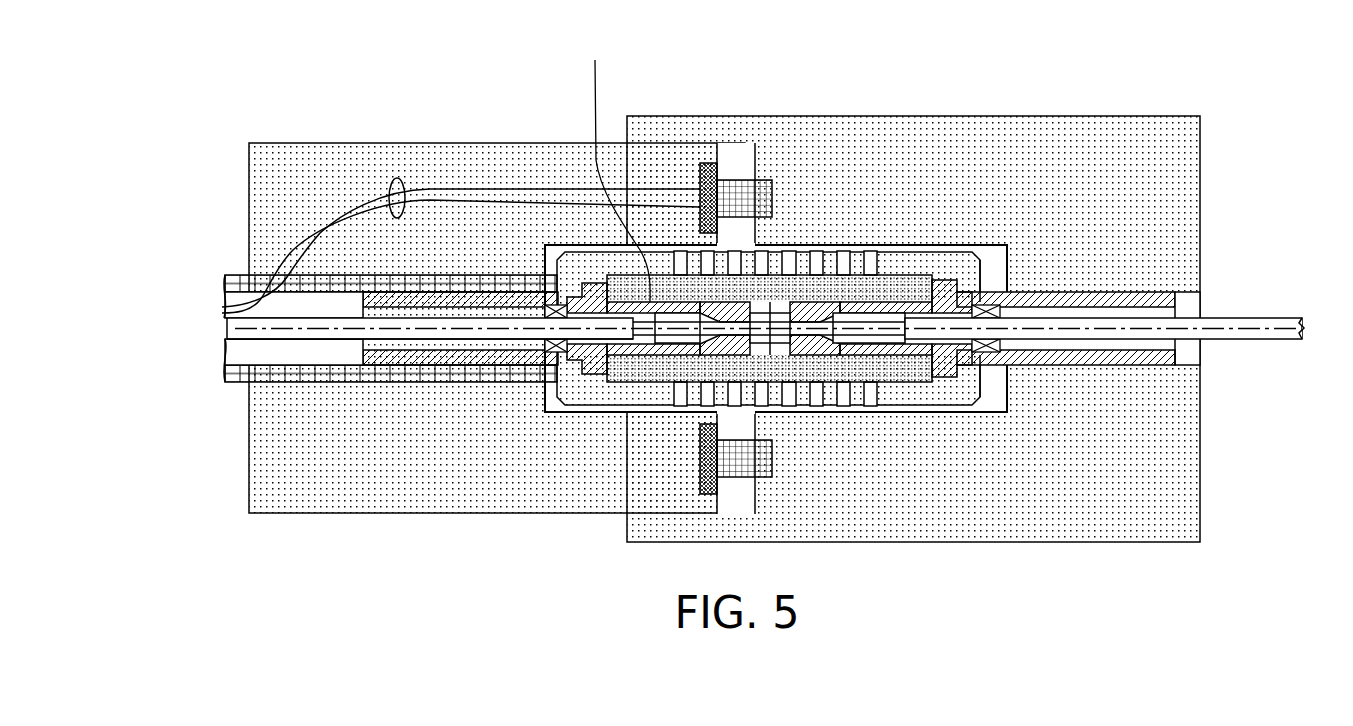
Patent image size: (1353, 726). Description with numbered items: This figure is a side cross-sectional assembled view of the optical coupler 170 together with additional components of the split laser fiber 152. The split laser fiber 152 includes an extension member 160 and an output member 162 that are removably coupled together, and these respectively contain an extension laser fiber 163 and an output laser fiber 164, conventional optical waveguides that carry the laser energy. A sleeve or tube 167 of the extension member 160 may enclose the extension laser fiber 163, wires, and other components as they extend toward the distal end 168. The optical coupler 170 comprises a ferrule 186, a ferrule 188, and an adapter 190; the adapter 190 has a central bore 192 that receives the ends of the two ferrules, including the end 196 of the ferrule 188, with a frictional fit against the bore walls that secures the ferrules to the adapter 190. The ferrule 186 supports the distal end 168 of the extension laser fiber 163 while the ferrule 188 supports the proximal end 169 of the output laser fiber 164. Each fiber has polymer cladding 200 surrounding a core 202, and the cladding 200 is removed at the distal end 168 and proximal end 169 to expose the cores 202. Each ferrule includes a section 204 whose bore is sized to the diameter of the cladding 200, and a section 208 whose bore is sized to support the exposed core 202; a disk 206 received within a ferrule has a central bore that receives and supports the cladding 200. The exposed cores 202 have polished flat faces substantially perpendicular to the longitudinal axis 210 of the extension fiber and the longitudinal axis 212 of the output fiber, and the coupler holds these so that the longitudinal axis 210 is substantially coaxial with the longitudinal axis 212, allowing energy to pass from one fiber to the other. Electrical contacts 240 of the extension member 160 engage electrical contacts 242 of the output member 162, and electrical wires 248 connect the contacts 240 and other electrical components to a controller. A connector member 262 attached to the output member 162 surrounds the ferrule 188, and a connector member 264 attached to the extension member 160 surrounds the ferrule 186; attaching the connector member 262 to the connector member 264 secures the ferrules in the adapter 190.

The split laser fiber 152 is at (1234, 46).
The extension member 160 is at (224, 98).
The output member 162 is at (1221, 94).
The extension laser fiber 163 is at (313, 338).
The output laser fiber 164 is at (1268, 339).
The sleeve or tube 167 is at (233, 310).
The distal end 168 is at (478, 357).
The proximal end 169 is at (1062, 294).
The optical coupler 170 is at (993, 245).
The ferrule 186 is at (483, 293).
The ferrule 188 is at (1096, 366).
The adapter 190 is at (930, 285).
The central bore 192 is at (875, 275).
The end of ferrule 188 196 is at (897, 298).
The polymer cladding 200 is at (237, 334).
The core 202 is at (672, 338).
The section 204 is at (552, 297).
The disk 206 is at (548, 353).
The section 208 is at (727, 312).
The longitudinal axis 210 is at (287, 331).
The longitudinal axis 212 is at (1228, 326).
The electrical contacts 240 is at (700, 165).
The electrical contacts 242 is at (757, 180).
The electrical wires 248 is at (396, 178).
The connector member 262 is at (1190, 153).
The connector member 264 is at (250, 173).